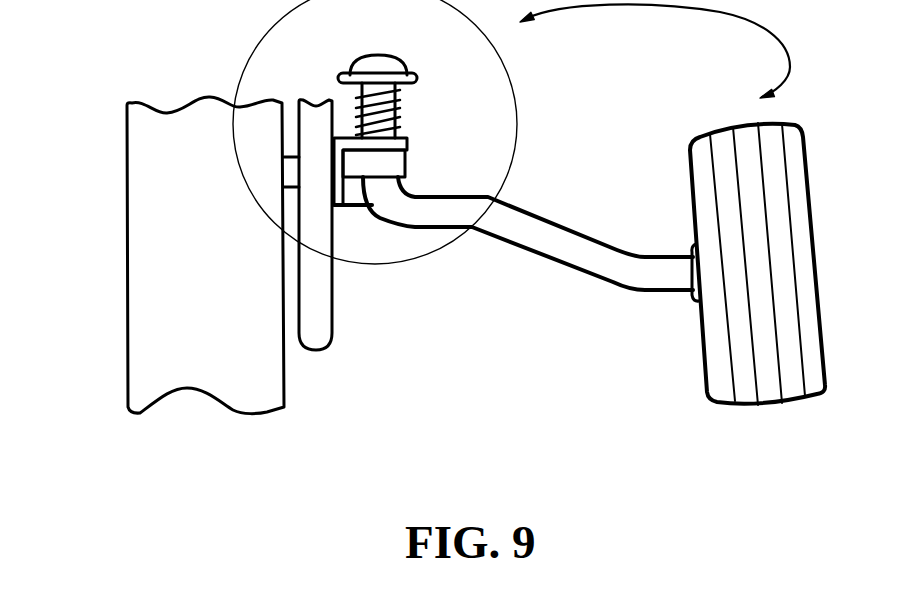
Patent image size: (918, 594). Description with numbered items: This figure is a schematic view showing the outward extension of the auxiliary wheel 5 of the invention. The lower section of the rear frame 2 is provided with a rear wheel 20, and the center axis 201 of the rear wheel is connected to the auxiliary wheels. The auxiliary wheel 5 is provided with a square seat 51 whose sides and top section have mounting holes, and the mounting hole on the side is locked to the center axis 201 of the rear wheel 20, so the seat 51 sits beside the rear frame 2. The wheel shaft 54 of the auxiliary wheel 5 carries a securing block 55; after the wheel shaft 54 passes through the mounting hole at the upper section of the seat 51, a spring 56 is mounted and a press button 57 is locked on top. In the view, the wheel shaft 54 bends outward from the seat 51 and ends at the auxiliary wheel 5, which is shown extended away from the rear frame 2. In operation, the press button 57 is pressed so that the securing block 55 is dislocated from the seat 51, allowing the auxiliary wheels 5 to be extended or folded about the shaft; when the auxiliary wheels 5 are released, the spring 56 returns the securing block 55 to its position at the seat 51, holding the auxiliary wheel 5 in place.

The rear wheel 20 is at (125, 182).
The rear frame 2 is at (327, 337).
The center axis of the rear wheel 201 is at (290, 178).
The square seat 51 is at (405, 144).
The securing block 55 is at (397, 166).
The spring 56 is at (398, 116).
The press button 57 is at (402, 73).
The wheel shaft 54 is at (571, 236).
The auxiliary wheel 5 is at (707, 349).